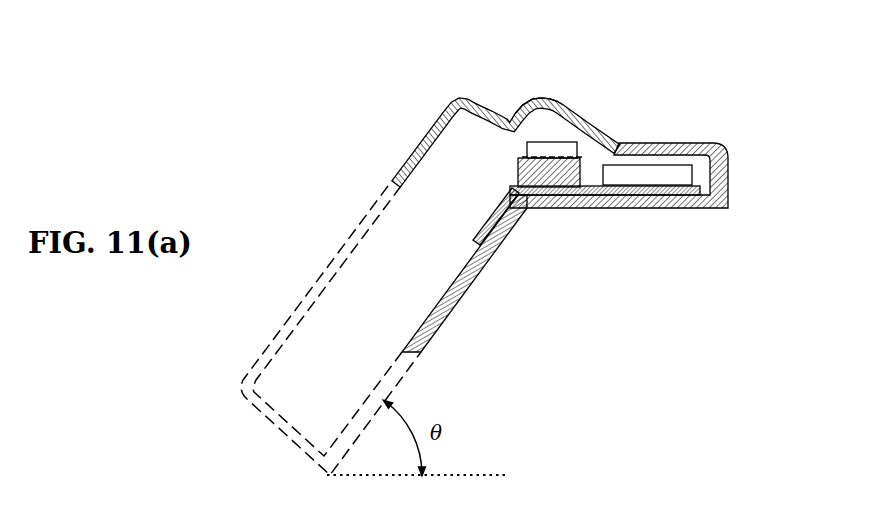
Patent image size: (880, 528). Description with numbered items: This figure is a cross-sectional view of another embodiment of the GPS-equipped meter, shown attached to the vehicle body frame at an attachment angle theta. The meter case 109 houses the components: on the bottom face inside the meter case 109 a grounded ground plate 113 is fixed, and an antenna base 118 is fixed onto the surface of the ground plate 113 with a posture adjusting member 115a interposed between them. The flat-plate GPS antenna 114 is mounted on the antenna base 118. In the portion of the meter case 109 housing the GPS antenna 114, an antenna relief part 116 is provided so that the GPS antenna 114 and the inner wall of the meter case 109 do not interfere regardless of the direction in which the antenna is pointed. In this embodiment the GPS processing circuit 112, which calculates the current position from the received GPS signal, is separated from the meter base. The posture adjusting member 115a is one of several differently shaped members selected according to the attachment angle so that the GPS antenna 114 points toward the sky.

The meter case 109 is at (453, 97).
The GPS processing circuit 112 is at (660, 180).
The ground plate 113 is at (503, 247).
The GPS antenna 114 is at (570, 147).
The posture adjusting member 115a is at (564, 189).
The antenna relief part 116 is at (552, 120).
The antenna base 118 is at (600, 163).